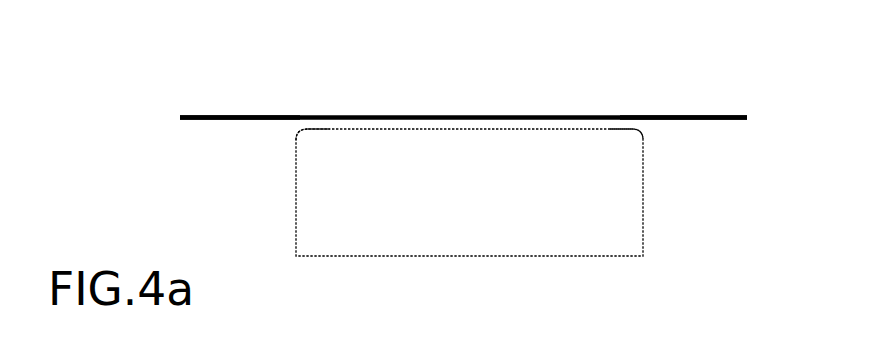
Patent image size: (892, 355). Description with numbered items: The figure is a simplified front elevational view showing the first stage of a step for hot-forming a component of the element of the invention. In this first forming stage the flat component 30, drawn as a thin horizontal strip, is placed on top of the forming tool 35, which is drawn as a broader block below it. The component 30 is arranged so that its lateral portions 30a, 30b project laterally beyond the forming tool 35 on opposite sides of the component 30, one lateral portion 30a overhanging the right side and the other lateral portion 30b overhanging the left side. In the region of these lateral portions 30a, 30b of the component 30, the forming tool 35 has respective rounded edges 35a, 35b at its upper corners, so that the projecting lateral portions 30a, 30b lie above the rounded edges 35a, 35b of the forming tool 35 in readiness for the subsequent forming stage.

The flat component 30 is at (440, 97).
The lateral portion 30a is at (660, 115).
The lateral portion 30b is at (242, 115).
The forming tool 35 is at (473, 257).
The rounded edge 35a is at (641, 134).
The rounded edge 35b is at (304, 132).